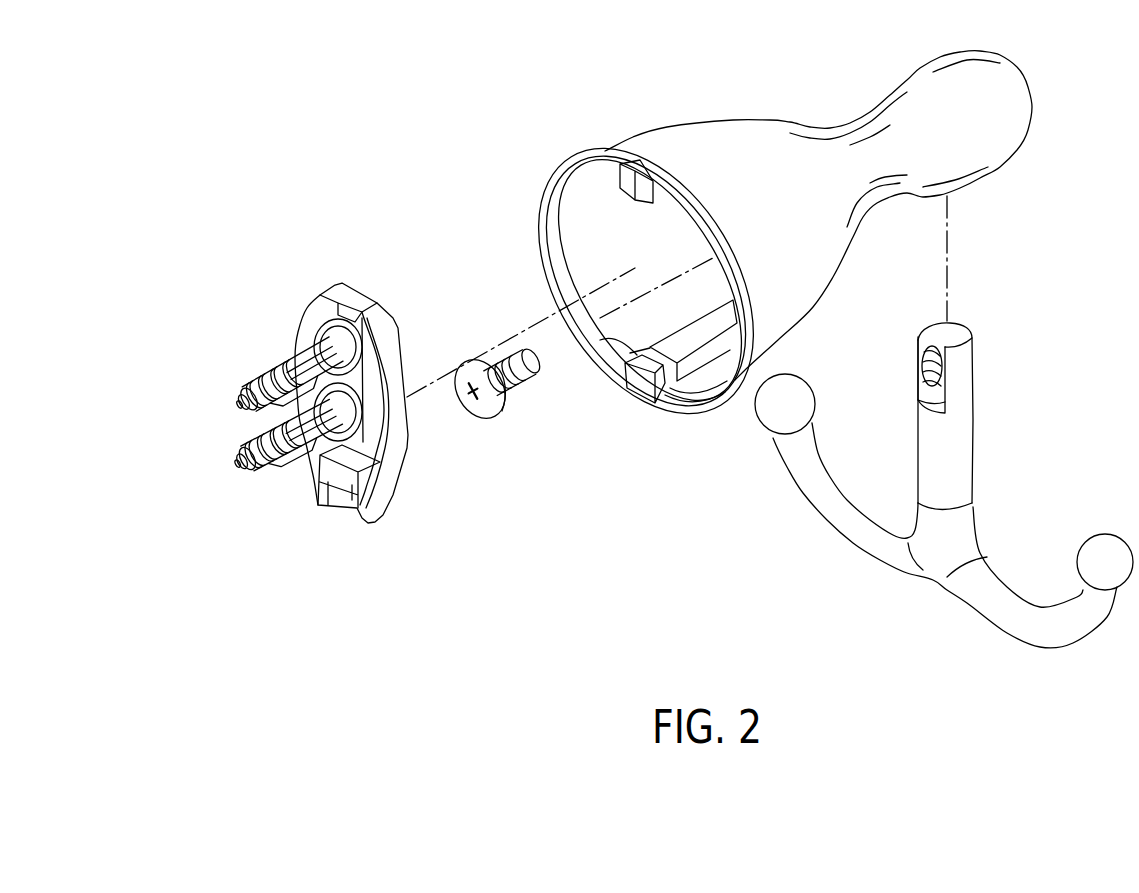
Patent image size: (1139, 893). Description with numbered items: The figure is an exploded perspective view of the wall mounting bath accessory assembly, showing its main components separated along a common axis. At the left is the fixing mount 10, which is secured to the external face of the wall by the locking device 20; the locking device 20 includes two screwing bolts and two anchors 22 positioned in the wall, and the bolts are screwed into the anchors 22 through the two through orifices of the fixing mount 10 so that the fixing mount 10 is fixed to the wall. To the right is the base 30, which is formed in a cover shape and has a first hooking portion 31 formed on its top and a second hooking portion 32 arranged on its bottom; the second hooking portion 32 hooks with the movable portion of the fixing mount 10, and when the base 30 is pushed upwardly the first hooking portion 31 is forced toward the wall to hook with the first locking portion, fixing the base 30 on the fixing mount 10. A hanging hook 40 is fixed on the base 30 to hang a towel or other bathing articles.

The fixing mount 10 is at (312, 285).
The locking device 20 is at (262, 355).
The anchors 22 is at (240, 380).
The base 30 is at (677, 110).
The first hooking portion 31 is at (633, 202).
The second hooking portion 32 is at (620, 340).
The hanging hook 40 is at (992, 402).